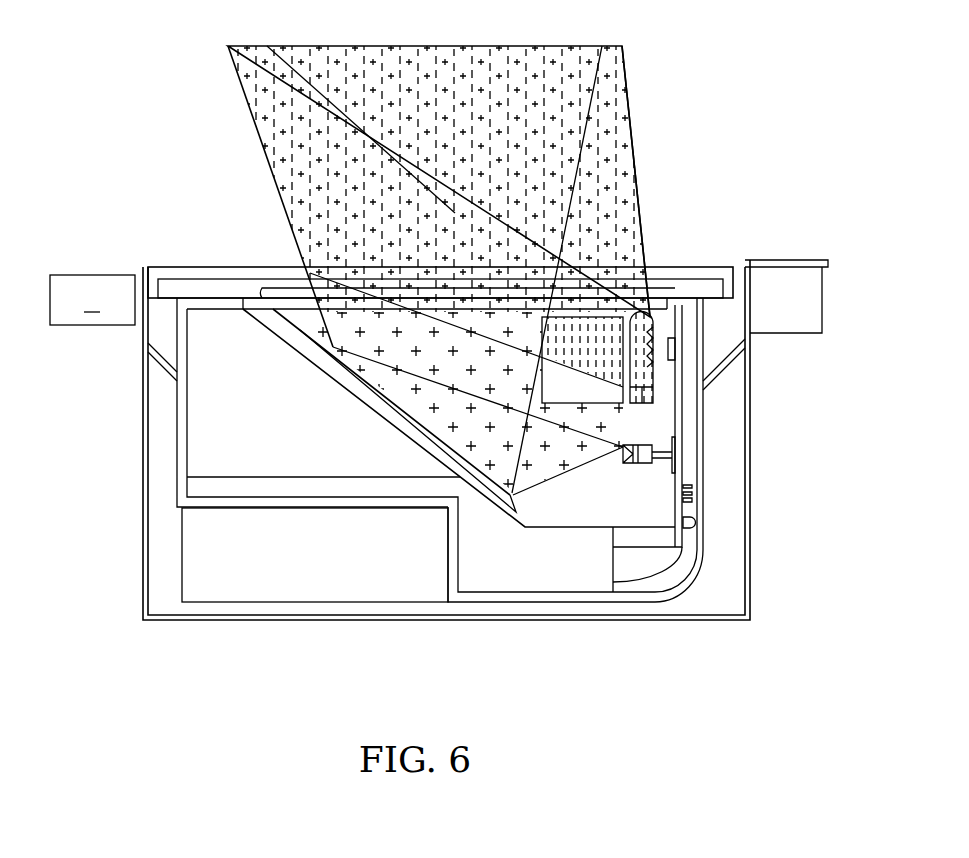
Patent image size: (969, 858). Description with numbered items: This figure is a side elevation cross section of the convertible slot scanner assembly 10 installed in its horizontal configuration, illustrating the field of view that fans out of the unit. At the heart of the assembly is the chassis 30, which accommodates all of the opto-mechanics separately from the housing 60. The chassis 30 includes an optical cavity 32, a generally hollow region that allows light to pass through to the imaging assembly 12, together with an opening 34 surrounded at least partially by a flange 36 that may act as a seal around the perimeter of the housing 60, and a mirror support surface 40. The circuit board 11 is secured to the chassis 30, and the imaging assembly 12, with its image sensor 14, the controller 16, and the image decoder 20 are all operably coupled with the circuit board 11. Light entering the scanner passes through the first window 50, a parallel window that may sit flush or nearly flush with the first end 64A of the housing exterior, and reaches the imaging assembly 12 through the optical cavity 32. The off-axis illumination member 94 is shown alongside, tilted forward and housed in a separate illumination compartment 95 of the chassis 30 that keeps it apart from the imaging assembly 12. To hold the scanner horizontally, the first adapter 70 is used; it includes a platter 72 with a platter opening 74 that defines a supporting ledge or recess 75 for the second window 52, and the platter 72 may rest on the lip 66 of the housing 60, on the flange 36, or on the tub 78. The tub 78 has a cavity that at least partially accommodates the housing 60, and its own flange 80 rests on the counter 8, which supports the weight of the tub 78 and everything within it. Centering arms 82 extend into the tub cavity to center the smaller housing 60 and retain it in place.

The counter 8 is at (86, 275).
The convertible slot scanner assembly 10 is at (103, 541).
The circuit board 11 is at (682, 530).
The imaging assembly 12 is at (675, 440).
The image sensor 14 is at (652, 460).
The controller 16 is at (690, 503).
The image decoder 20 is at (688, 410).
The chassis 30 is at (650, 537).
The optical cavity 32 is at (437, 334).
The opening 34 is at (258, 313).
The flange 36 is at (195, 300).
The mirror support surface 40 is at (475, 472).
The first window 50 is at (485, 300).
The second window 52 is at (547, 282).
The housing 60 is at (683, 583).
The first end of the exterior surface 64A is at (200, 606).
The lip 66 is at (710, 300).
The first adapter 70 is at (715, 267).
The platter 72 is at (682, 275).
The platter opening 74 is at (264, 269).
The supporting ledge or recess 75 is at (310, 275).
The tub 78 is at (143, 490).
The flange 80 is at (92, 274).
The centering arms 82 is at (163, 365).
The illumination member 94 is at (653, 365).
The illumination compartment 95 is at (572, 322).